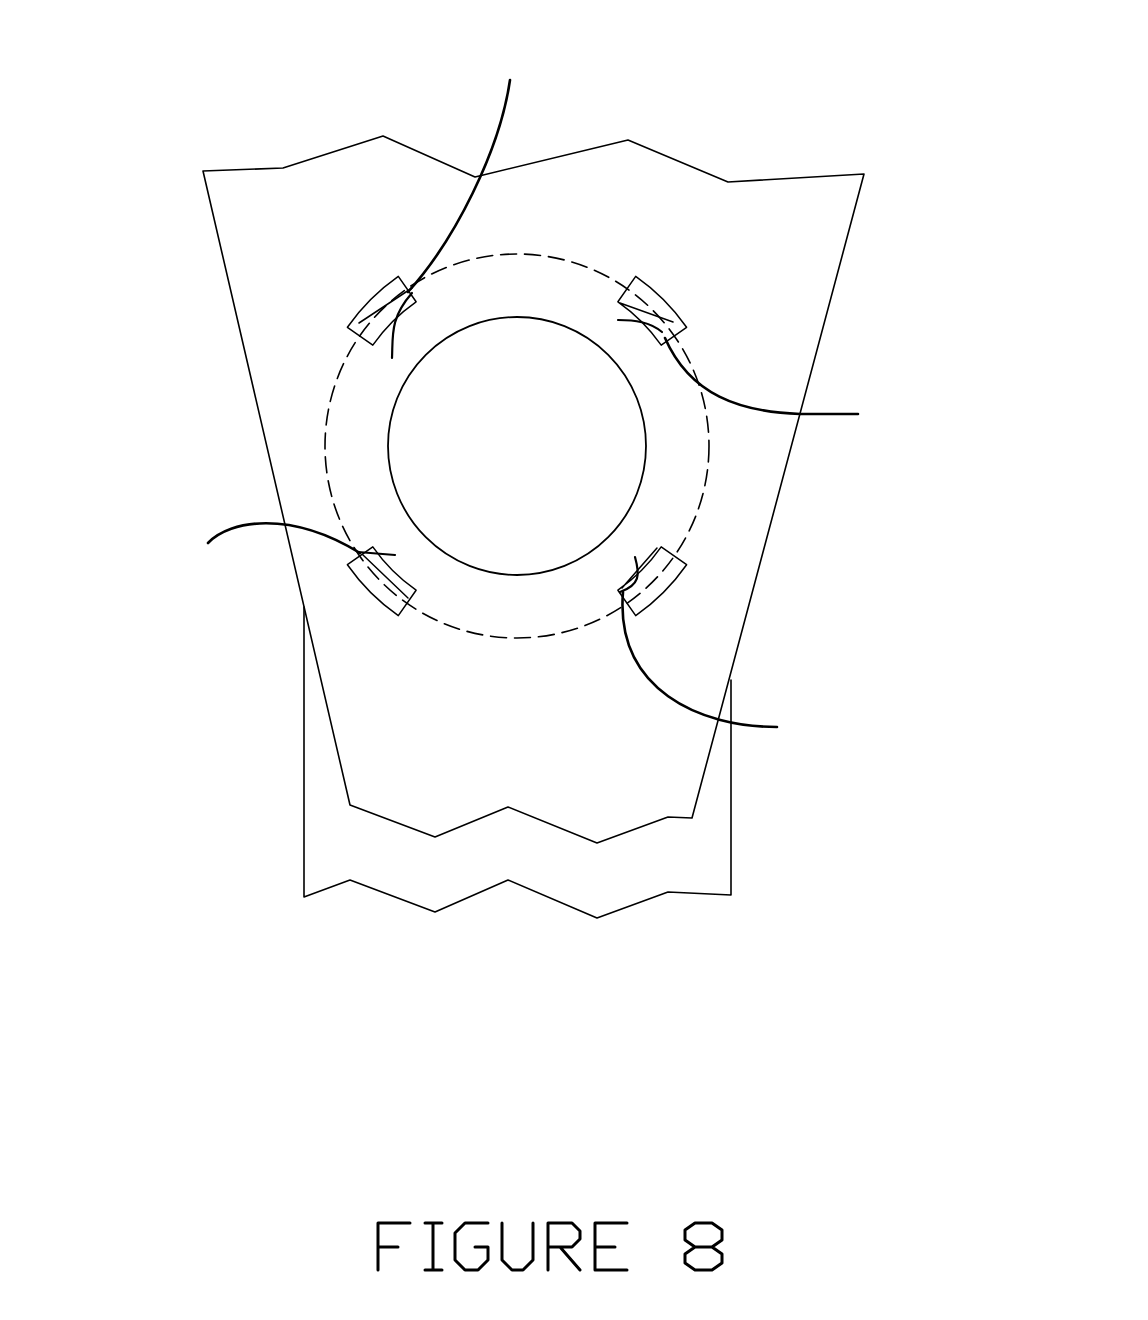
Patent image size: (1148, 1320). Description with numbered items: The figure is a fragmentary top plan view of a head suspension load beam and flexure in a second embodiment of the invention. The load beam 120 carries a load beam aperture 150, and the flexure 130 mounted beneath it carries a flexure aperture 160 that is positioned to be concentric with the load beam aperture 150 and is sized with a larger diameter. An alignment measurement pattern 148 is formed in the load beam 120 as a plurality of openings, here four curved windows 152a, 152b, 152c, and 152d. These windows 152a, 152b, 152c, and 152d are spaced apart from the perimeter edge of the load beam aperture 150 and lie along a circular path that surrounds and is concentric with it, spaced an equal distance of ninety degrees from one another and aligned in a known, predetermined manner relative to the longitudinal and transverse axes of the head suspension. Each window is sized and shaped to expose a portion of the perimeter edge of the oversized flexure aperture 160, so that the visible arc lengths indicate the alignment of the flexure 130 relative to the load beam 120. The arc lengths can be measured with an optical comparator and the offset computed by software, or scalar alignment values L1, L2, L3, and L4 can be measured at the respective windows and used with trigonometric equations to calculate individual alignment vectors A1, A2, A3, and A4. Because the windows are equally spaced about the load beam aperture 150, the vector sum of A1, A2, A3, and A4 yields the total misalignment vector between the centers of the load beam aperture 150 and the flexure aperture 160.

The load beam 120 is at (258, 210).
The flexure 130 is at (377, 850).
The alignment measurement pattern 148 is at (752, 90).
The load beam aperture 150 is at (673, 468).
The curved window 152a is at (363, 317).
The curved window 152b is at (679, 322).
The curved window 152c is at (678, 568).
The curved window 152d is at (367, 580).
The flexure aperture 160 is at (592, 495).
The alignment vector A1 is at (468, 170).
The alignment vector A2 is at (778, 386).
The alignment vector A3 is at (715, 671).
The alignment vector A4 is at (272, 549).
The scalar alignment value L1 is at (388, 347).
The scalar alignment value L2 is at (625, 316).
The scalar alignment value L3 is at (633, 561).
The scalar alignment value L4 is at (390, 556).